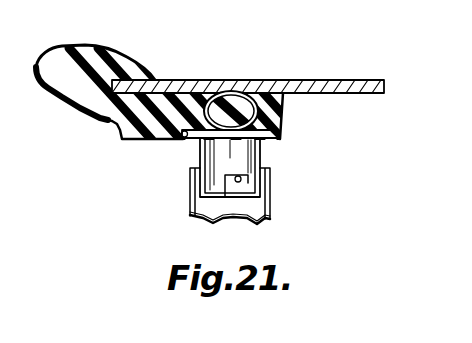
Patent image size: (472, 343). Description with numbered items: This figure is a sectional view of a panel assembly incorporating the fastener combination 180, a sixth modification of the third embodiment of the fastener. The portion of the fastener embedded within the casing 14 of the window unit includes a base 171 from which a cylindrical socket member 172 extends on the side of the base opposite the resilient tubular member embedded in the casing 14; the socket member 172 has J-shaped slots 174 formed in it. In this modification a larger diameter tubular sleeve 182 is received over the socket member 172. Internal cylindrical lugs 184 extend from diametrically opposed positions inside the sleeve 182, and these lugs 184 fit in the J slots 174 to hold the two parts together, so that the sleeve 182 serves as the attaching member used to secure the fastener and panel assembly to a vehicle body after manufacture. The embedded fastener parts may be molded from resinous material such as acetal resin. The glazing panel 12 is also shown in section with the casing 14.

The casing 14 is at (105, 60).
The plate 12 is at (320, 81).
The fastener combination 180 is at (302, 132).
The base 171 is at (189, 138).
The cylindrical socket member 172 is at (200, 146).
The J-shaped slots 174 is at (233, 190).
The internal cylindrical lugs 184 is at (243, 178).
The tubular sleeve 182 is at (271, 200).